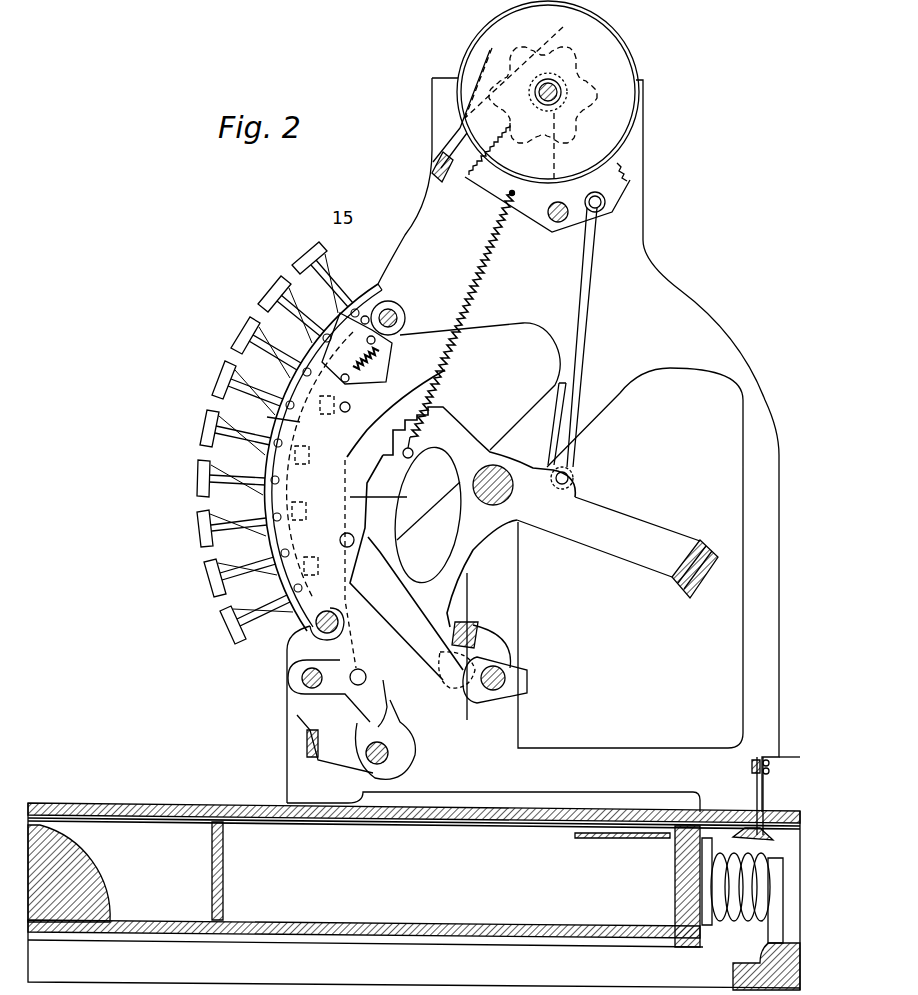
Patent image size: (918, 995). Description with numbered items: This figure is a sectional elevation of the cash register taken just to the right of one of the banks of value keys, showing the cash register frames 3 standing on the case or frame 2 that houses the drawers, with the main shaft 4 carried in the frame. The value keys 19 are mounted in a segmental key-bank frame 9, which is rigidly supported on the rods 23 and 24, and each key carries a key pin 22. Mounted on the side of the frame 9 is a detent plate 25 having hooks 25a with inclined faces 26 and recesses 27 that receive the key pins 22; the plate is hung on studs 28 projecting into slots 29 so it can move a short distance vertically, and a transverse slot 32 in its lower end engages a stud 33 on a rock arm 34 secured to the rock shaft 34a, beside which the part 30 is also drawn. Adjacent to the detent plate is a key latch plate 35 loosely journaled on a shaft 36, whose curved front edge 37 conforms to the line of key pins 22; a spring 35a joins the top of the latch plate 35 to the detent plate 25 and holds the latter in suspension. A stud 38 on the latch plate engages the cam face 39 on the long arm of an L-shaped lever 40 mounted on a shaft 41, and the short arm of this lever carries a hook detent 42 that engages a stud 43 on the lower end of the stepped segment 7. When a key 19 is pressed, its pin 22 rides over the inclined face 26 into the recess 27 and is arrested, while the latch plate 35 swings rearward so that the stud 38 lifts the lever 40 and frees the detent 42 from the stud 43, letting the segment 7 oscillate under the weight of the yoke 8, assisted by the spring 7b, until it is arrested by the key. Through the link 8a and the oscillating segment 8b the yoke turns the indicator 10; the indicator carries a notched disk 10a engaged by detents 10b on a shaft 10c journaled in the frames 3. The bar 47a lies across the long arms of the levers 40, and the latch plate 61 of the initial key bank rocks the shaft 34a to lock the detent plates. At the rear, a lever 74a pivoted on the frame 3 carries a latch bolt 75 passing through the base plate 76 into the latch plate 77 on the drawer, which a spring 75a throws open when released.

The case or frame 2 is at (414, 896).
The cash register frames 3 is at (533, 445).
The main shaft 4 is at (513, 487).
The stepped segments 7 is at (445, 428).
The springs 7b is at (492, 258).
The yokes 8 is at (697, 545).
The link 8a is at (592, 262).
The oscillating segment 8b is at (507, 196).
The key-bank frames 9 is at (366, 283).
The indicators 10 is at (630, 52).
The notched wheel or disk 10a is at (531, 98).
The detents 10b is at (447, 133).
The shaft 10c is at (431, 168).
The keys 19 is at (277, 284).
The key pins 22 is at (351, 300).
The rod 23 is at (395, 312).
The rod 24 is at (315, 623).
The detent plates 25 is at (380, 393).
The hooks 25a is at (337, 363).
The inclined faces 26 is at (337, 325).
The recesses 27 is at (397, 334).
The studs 28 is at (322, 485).
The slots 29 is at (353, 405).
The bracket 30 is at (325, 715).
The transverse slot 32 is at (368, 674).
The stud 33 is at (355, 664).
The rock arm 34 is at (325, 677).
The rod or shaft 34a is at (300, 678).
The key latch plate 35 is at (362, 730).
The spring 35a is at (372, 360).
The shaft 36 is at (392, 755).
The front edge 37 is at (273, 460).
The stud 38 is at (363, 525).
The cam face 39 is at (390, 541).
The oscillating L-shaped lever 40 is at (410, 605).
The shaft 41 is at (528, 670).
The hook detent 42 is at (438, 663).
The stud 43 is at (452, 692).
The bar 47a is at (478, 625).
The latch plate 61 is at (338, 455).
The lever 74a is at (770, 763).
The latch bolt 75 is at (757, 800).
The springs 75a is at (720, 883).
The base plate 76 is at (192, 805).
The latch plate 77 is at (766, 840).